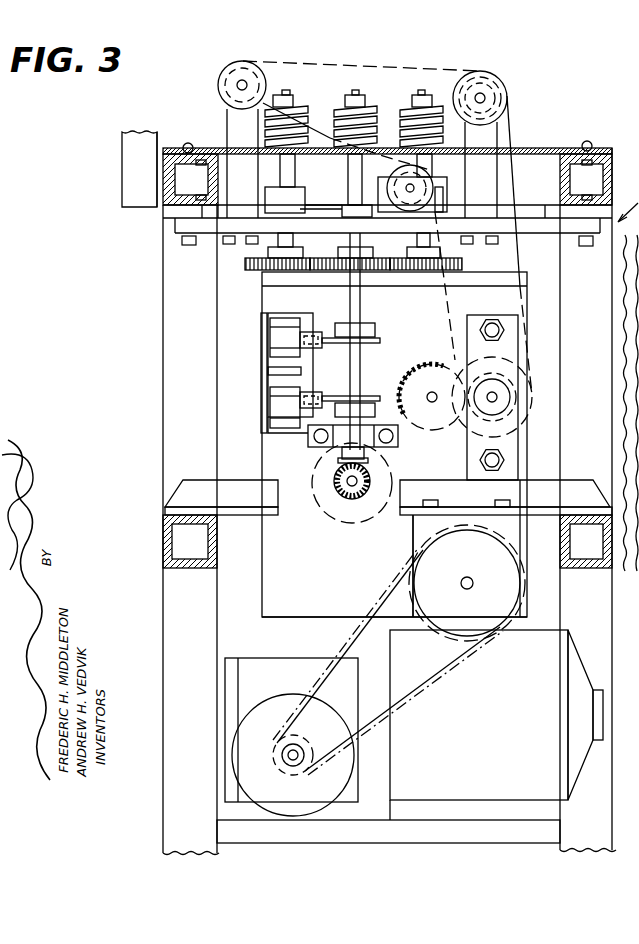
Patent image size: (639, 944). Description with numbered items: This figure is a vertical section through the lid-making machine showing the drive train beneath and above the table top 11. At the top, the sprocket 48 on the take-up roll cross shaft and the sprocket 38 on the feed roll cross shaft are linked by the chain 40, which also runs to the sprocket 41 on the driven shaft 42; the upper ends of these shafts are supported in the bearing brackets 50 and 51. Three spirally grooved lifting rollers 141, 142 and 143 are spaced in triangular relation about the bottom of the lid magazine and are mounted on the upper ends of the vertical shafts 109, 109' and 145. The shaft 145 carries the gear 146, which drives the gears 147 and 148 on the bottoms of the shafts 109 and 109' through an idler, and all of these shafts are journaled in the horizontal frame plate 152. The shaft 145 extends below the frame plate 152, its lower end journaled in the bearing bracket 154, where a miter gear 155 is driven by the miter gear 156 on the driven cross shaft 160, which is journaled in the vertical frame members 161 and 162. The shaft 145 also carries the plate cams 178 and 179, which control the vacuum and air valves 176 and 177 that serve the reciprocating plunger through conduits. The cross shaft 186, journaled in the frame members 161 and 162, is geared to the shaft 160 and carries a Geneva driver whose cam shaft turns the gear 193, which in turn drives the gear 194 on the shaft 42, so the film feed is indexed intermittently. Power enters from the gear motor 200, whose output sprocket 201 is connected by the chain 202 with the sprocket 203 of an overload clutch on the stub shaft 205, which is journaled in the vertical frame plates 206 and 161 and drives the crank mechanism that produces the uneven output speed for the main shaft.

The table top 11 is at (546, 147).
The sprocket 38 is at (498, 83).
The chain 40 is at (402, 71).
The sprocket 41 is at (522, 399).
The driven shaft 42 is at (497, 397).
The sprocket 48 is at (218, 85).
The bearing bracket 50 is at (493, 130).
The bearing bracket 51 is at (228, 128).
The vertical shaft 109 is at (348, 185).
The vertical shaft 109' is at (422, 185).
The spirally grooved lifting roller 141 is at (295, 107).
The spirally grooved lifting roller 142 is at (368, 107).
The spirally grooved lifting roller 143 is at (437, 103).
The vertical shaft 145 is at (352, 187).
The gear 146 is at (333, 272).
The gear 147 is at (248, 272).
The gear 148 is at (462, 264).
The frame plate 152 is at (487, 281).
The bearing bracket 154 is at (380, 444).
The miter gear 155 is at (317, 472).
The miter gear 156 is at (342, 497).
The driven cross shaft 160 is at (358, 498).
The vertical frame member 161 is at (267, 456).
The vertical frame member 162 is at (523, 246).
The vacuum and air valve 176 is at (276, 340).
The vacuum and air valve 177 is at (276, 402).
The plate cam 178 is at (360, 345).
The plate cam 179 is at (367, 399).
The cross shaft 186 is at (431, 400).
The gear 193 is at (427, 362).
The gear 194 is at (518, 365).
The gear motor 200 is at (504, 735).
The output sprocket 201 is at (293, 762).
The chain 202 is at (455, 660).
The sprocket 203 is at (489, 633).
The stub shaft 205 is at (466, 578).
The vertical frame plate 206 is at (524, 598).